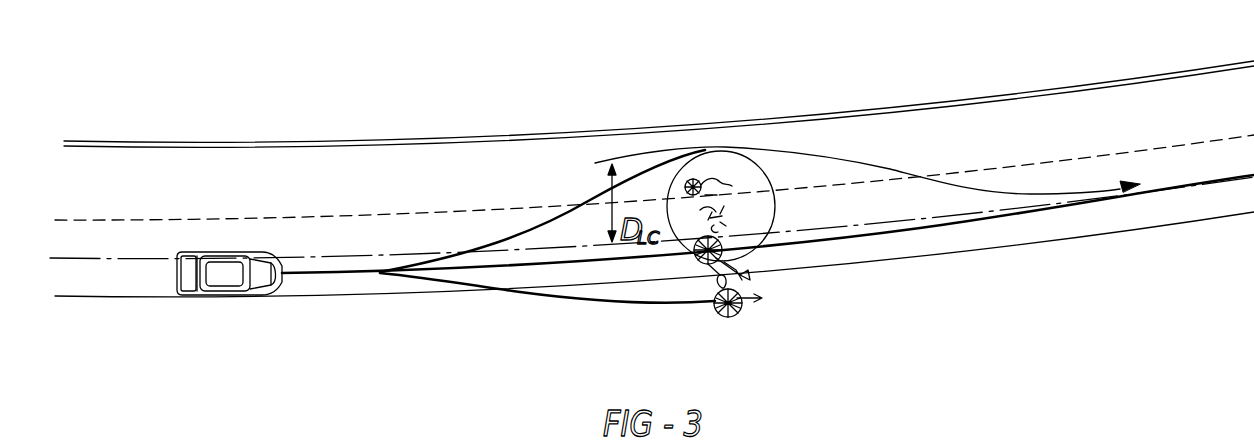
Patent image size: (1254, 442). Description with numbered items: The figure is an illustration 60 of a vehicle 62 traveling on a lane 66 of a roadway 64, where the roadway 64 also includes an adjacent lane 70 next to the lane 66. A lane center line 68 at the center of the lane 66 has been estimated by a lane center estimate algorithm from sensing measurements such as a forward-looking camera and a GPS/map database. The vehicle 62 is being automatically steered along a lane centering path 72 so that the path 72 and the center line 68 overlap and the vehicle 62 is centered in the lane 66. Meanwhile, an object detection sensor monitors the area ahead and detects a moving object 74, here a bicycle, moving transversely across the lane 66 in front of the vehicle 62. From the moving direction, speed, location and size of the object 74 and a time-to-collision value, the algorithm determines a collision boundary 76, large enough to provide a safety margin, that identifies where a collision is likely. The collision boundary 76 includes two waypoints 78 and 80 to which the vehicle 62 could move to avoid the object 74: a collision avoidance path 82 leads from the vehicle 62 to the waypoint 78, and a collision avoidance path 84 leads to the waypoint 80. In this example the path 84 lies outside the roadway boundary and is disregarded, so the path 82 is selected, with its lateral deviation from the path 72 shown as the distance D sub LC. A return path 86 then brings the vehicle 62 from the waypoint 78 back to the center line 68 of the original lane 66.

The illustration 60 is at (787, 97).
The vehicle 62 is at (214, 275).
The roadway 64 is at (498, 132).
The lane 66 is at (95, 277).
The lane center line 68 is at (155, 257).
The adjacent lane 70 is at (88, 167).
The lane centering path 72 is at (527, 263).
The moving object 74 is at (743, 318).
The collision boundary 76 is at (698, 262).
The waypoint 78 is at (706, 150).
The waypoint 80 is at (767, 266).
The collision avoidance path 82 is at (587, 197).
The collision avoidance path 84 is at (570, 300).
The return path 86 is at (893, 168).